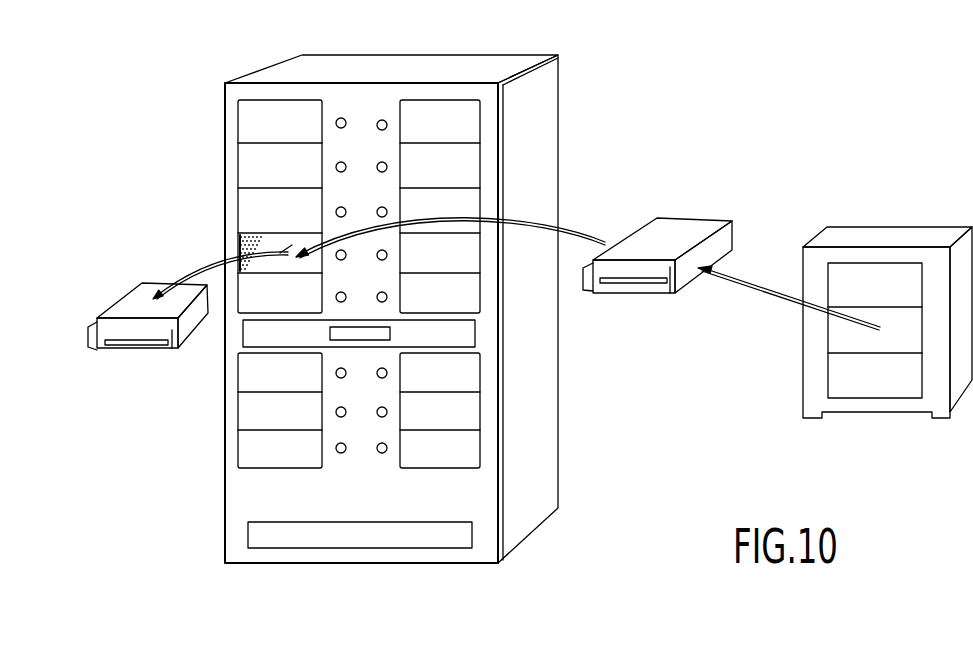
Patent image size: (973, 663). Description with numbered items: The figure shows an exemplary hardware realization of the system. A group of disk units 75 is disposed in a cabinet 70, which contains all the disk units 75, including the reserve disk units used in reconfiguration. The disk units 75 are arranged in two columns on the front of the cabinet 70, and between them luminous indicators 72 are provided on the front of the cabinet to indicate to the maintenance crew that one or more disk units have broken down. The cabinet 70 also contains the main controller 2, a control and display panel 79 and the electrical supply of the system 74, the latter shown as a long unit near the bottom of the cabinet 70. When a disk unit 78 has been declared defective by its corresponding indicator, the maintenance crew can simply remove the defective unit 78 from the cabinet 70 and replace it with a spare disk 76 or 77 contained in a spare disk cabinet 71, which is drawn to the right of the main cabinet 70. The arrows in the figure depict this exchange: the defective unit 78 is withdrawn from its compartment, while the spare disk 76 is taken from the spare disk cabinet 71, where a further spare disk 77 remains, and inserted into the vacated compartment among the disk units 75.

The cabinet 70 is at (472, 58).
The luminous indicators 72 is at (341, 118).
The disk units 75 is at (463, 127).
The main controller 2 is at (468, 333).
The control and display panel 79 is at (370, 337).
The electrical supply of the system 74 is at (398, 537).
The defective disk unit 78 is at (137, 292).
The spare disk 76 is at (688, 219).
The spare disk cabinet 71 is at (848, 237).
The spare disk 77 is at (873, 390).